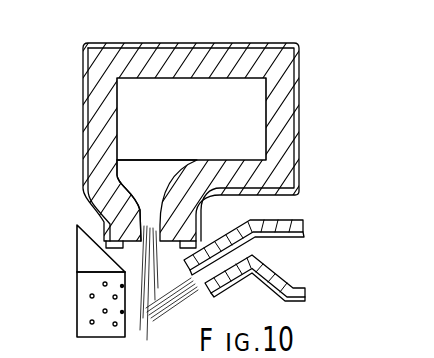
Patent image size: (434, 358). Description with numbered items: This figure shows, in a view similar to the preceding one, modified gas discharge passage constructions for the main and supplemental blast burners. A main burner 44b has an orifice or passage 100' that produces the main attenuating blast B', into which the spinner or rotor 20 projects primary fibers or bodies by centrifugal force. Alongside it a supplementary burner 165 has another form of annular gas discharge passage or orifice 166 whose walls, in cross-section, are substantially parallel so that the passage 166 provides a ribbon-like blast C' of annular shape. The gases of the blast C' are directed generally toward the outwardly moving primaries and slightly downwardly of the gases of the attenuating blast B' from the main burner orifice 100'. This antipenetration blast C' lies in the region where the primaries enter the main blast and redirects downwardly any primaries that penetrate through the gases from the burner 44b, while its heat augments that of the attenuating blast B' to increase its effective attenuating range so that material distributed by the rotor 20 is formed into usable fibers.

The main burner 44b is at (200, 40).
The orifice or passage 100' is at (93, 200).
The spinner or rotor 20 is at (83, 284).
The main attenuating blast B' is at (110, 263).
The antipenetration blast C' is at (169, 288).
The annular gas discharge passage or orifice 166 is at (196, 282).
The supplementary burner 165 is at (248, 281).